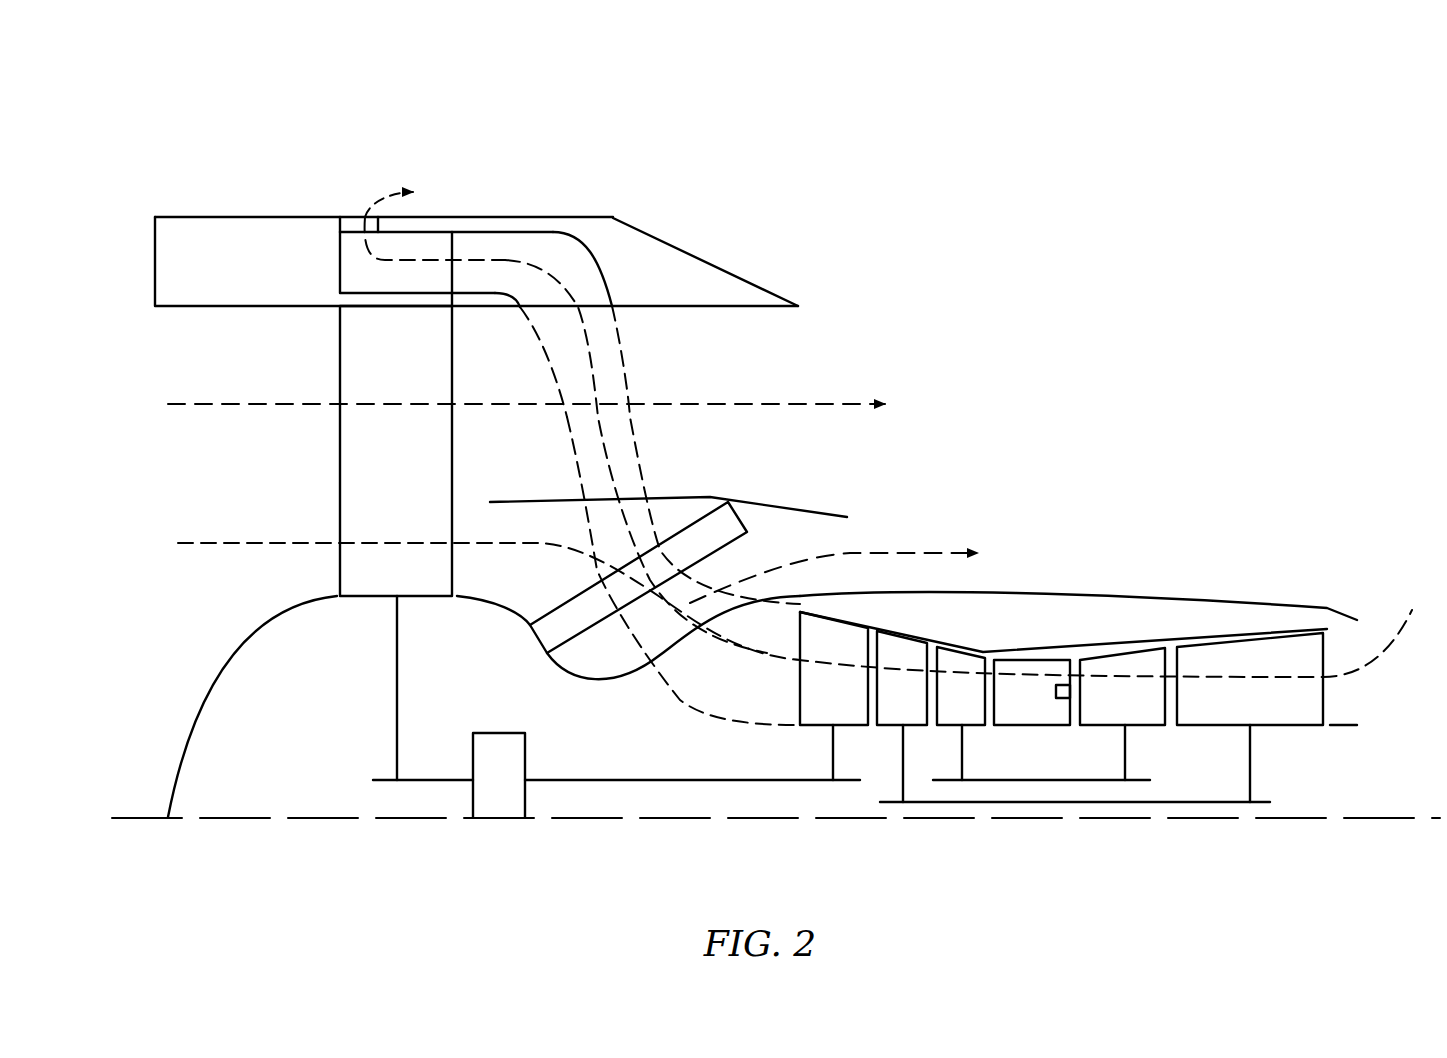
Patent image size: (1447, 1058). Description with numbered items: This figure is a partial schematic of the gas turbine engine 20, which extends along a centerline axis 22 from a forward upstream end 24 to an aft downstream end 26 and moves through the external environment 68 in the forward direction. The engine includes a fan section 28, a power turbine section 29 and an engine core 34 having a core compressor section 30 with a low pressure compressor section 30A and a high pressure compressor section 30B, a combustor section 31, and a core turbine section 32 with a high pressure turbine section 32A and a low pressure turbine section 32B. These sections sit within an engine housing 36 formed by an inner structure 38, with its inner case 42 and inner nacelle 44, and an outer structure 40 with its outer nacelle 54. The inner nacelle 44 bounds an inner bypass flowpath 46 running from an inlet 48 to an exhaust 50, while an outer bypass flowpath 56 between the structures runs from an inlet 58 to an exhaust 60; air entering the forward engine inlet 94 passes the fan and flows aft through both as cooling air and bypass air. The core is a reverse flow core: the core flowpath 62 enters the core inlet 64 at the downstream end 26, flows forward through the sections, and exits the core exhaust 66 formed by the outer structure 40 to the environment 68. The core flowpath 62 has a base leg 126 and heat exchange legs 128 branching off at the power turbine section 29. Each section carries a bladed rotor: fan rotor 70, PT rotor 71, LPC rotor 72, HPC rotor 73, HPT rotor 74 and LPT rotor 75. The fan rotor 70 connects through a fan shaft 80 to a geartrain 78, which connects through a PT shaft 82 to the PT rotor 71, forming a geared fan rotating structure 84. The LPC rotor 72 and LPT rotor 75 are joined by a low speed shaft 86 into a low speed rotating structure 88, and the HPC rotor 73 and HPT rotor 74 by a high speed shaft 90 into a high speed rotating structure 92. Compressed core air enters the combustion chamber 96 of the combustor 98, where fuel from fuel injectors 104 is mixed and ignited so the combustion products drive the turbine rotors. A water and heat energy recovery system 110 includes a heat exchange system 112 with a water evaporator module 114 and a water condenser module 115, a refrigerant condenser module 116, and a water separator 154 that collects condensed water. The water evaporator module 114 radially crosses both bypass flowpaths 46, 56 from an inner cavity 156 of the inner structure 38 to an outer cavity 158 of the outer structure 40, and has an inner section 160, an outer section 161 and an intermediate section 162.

The gas turbine engine 20 is at (170, 110).
The centerline axis 22 is at (120, 822).
The forward upstream end 24 is at (152, 252).
The aft downstream end 26 is at (1357, 620).
The fan section 28 is at (343, 160).
The power turbine section 29 is at (860, 510).
The core compressor section 30 is at (1080, 462).
The low pressure compressor section 30A is at (1177, 513).
The high pressure compressor section 30B is at (1165, 513).
The core combustor section 31 is at (1070, 510).
The core turbine section 32 is at (878, 462).
The high pressure turbine section 32A is at (937, 510).
The low pressure turbine section 32B is at (927, 510).
The turbine engine core 34 is at (950, 838).
The engine housing 36 is at (766, 240).
The housing inner structure 38 is at (757, 494).
The housing outer structure 40 is at (785, 283).
The inner case 42 is at (1040, 655).
The inner nacelle 44 is at (690, 492).
The inner bypass flowpath 46 is at (767, 554).
The inner bypass inlet 48 is at (480, 522).
The inner bypass exhaust 50 is at (872, 542).
The outer nacelle 54 is at (224, 217).
The outer bypass flowpath 56 is at (650, 364).
The outer bypass inlet 58 is at (470, 358).
The outer bypass exhaust 60 is at (808, 357).
The core flowpath 62 is at (1130, 677).
The core inlet 64 is at (1357, 688).
The core exhaust 66 is at (365, 215).
The external environment 68 is at (686, 152).
The fan rotor 70 is at (397, 687).
The power turbine rotor 71 is at (833, 752).
The low pressure compressor rotor 72 is at (1250, 765).
The high pressure compressor rotor 73 is at (1125, 752).
The high pressure turbine rotor 74 is at (962, 752).
The low pressure turbine rotor 75 is at (903, 770).
The geartrain 78 is at (484, 787).
The fan shaft 80 is at (423, 780).
The power turbine shaft 82 is at (590, 780).
The fan rotating structure 84 is at (383, 795).
The low speed shaft 86 is at (1210, 805).
The low speed rotating structure 88 is at (1246, 825).
The high speed shaft 90 is at (1097, 785).
The high speed rotating structure 92 is at (1047, 792).
The forward engine inlet 94 is at (152, 360).
The combustion chamber 96 is at (1009, 714).
The combustor 98 is at (1020, 658).
The fuel injector 104 is at (1062, 700).
The water and heat energy recovery system 110 is at (635, 260).
The heat exchange system 112 is at (601, 253).
The water evaporator module 114 is at (680, 708).
The water condenser module 115 is at (520, 228).
The refrigerant condenser module 116 is at (533, 647).
The base leg 126 is at (1213, 675).
The heat exchange leg 128 is at (738, 657).
The water separator 154 is at (340, 257).
The inner cavity 156 is at (545, 726).
The outer cavity 158 is at (650, 294).
The inner section 160 is at (680, 705).
The outer section 161 is at (498, 300).
The intermediate section 162 is at (640, 456).